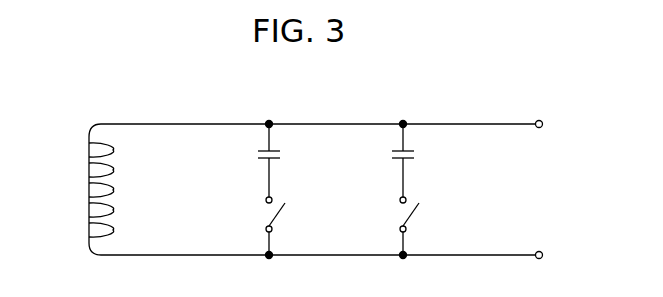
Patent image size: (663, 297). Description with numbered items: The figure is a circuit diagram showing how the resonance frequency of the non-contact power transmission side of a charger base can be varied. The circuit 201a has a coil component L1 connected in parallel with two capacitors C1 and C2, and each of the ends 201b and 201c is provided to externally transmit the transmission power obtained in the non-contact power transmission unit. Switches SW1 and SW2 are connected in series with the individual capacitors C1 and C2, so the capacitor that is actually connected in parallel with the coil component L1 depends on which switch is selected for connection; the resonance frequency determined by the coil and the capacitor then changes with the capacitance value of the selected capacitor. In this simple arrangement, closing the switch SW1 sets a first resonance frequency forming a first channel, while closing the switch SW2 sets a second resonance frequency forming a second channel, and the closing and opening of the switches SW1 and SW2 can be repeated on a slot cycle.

The non-contact power transmission unit wiring 201a is at (338, 118).
The end 201b is at (542, 121).
The end 201c is at (542, 252).
The coil component L1 is at (86, 208).
The capacitor C1 is at (256, 153).
The capacitor C2 is at (390, 153).
The switch SW1 is at (263, 215).
The switch SW2 is at (398, 215).